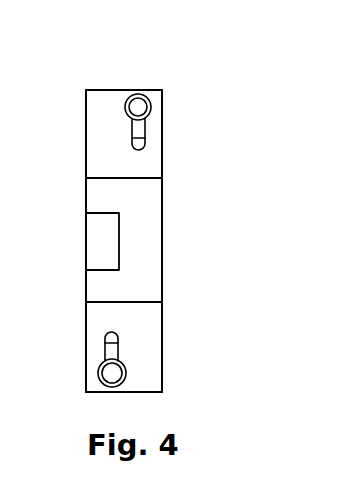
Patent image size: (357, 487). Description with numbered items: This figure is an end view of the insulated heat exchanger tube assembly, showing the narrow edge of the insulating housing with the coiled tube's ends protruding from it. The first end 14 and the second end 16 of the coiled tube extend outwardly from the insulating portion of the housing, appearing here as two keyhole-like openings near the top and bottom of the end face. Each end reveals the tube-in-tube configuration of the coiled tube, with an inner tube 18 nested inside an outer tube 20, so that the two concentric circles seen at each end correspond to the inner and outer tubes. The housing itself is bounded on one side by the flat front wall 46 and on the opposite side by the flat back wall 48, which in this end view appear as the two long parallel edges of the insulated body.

The first end 14 is at (144, 88).
The second end 16 is at (122, 357).
The inner tube 18 is at (101, 371).
The outer tube 20 is at (126, 366).
The flat front wall 46 is at (88, 158).
The flat back wall 48 is at (162, 160).